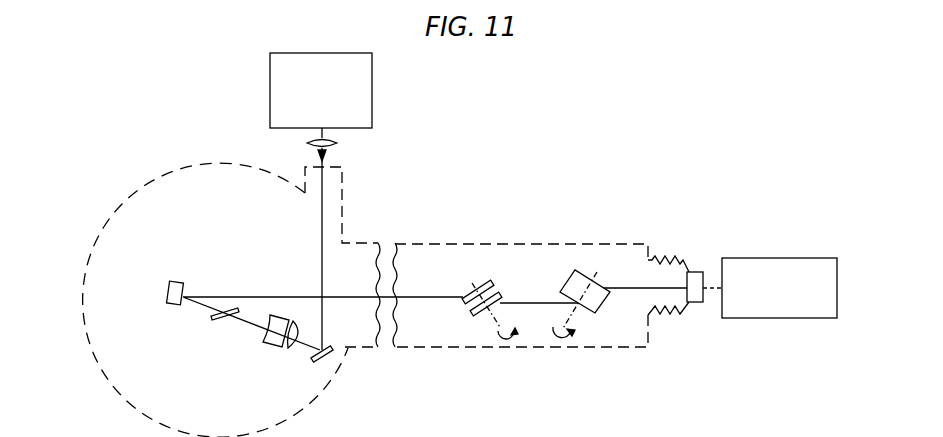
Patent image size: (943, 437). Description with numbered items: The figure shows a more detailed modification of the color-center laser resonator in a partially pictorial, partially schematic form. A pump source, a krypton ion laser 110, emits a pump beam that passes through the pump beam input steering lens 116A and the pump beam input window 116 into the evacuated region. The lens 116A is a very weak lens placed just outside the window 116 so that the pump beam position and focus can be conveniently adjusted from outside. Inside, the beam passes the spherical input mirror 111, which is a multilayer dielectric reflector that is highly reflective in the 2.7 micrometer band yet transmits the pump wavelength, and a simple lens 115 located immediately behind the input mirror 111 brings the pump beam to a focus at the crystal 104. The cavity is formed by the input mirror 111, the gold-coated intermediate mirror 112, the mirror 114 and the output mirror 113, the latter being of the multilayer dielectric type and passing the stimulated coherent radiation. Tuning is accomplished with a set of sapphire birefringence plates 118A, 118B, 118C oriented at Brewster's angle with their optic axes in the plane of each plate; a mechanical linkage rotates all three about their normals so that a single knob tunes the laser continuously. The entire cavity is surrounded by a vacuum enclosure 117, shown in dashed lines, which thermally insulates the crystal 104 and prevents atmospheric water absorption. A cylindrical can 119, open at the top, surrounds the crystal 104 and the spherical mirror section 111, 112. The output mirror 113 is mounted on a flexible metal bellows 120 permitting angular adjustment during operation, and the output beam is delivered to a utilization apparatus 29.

The krypton ion laser 110 is at (368, 78).
The pump beam input steering lens 116A is at (308, 144).
The pump beam input window 116 is at (342, 164).
The cylindrical can 119 is at (327, 385).
The intermediate mirror 112 is at (177, 284).
The crystal 104 is at (213, 319).
The input mirror 111 is at (263, 343).
The lens 115 is at (290, 350).
The mirror 114 is at (329, 348).
The vacuum enclosure 117 is at (521, 348).
The sapphire birefringence plate 118A is at (482, 285).
The sapphire birefringence plate 118B is at (464, 315).
The sapphire birefringence plate 118C is at (589, 316).
The output mirror 113 is at (693, 272).
The flexible metal bellows 120 is at (676, 316).
The utilization apparatus 29 is at (801, 258).